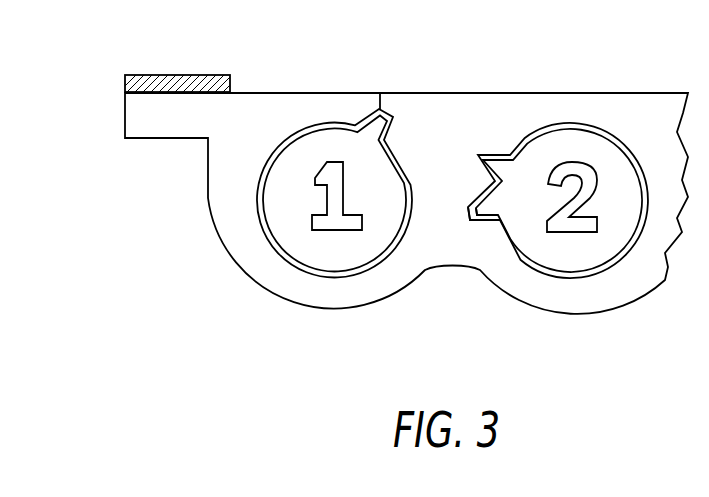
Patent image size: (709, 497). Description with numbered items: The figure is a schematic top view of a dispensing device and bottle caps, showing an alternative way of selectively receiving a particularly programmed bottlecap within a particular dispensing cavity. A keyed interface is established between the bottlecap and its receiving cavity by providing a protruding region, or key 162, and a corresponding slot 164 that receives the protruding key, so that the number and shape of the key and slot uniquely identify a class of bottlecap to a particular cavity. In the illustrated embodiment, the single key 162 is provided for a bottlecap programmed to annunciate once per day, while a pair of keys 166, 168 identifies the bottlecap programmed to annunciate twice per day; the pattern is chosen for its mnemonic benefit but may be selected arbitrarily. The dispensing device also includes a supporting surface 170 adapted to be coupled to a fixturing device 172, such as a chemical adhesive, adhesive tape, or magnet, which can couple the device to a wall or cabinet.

The key 162 is at (385, 133).
The slot 164 is at (381, 93).
The key 166 is at (497, 158).
The key 168 is at (495, 213).
The supporting surface 170 is at (311, 93).
The fixturing device 172 is at (180, 75).